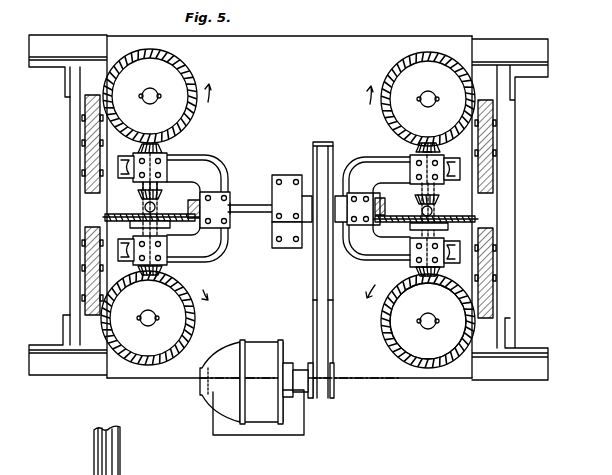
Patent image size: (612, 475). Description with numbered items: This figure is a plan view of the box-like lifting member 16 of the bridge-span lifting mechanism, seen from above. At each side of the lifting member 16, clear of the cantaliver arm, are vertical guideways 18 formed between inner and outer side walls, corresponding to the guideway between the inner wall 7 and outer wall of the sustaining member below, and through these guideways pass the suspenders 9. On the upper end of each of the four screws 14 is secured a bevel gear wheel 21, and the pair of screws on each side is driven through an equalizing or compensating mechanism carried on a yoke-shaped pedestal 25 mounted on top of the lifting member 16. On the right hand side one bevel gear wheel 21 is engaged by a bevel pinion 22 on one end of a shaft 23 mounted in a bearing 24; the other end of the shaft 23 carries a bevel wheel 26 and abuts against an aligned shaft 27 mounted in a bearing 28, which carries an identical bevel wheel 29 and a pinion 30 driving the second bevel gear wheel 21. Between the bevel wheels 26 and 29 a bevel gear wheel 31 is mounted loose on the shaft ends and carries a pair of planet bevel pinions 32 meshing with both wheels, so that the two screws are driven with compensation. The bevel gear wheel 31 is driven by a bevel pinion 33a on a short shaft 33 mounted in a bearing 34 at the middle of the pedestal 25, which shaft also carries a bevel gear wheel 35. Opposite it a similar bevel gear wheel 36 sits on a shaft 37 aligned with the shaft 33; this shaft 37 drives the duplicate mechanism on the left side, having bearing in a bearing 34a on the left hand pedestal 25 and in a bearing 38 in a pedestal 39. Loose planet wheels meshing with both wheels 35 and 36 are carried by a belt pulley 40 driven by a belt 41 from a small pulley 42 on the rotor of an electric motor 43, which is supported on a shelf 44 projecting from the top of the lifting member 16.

The vertical inner wall 7 is at (70, 290).
The suspenders 9 is at (85, 160).
The screw 14 is at (428, 85).
The lifting member 16 is at (289, 207).
The vertical guideways 18 is at (80, 205).
The bevel gear wheel 21 is at (188, 72).
The bevel pinion 22 is at (428, 321).
The shaft 23 is at (445, 255).
The bearing 24 is at (410, 250).
The yoke-shaped pedestal 25 is at (372, 153).
The bevel wheel 26 is at (130, 226).
The shaft 27 is at (493, 158).
The bearing 28 is at (417, 160).
The bevel wheel 29 is at (138, 194).
The pinion 30 is at (432, 142).
The bevel gear wheel 31 is at (103, 217).
The planet bevel pinions 32 is at (140, 208).
The short shaft 33 is at (352, 230).
The bevel pinion 33a is at (391, 203).
The bearing 34 is at (358, 185).
The bearing 34a is at (218, 150).
The bevel gear wheel 35 is at (331, 142).
The bevel gear wheel 36 is at (313, 168).
The shaft 37 is at (252, 214).
The bearing 38 is at (278, 192).
The pedestal 39 is at (286, 238).
The belt pulley 40 is at (315, 142).
The belt 41 is at (325, 343).
The small pulley 42 is at (336, 392).
The electric motor 43 is at (262, 410).
The shelf 44 is at (300, 423).